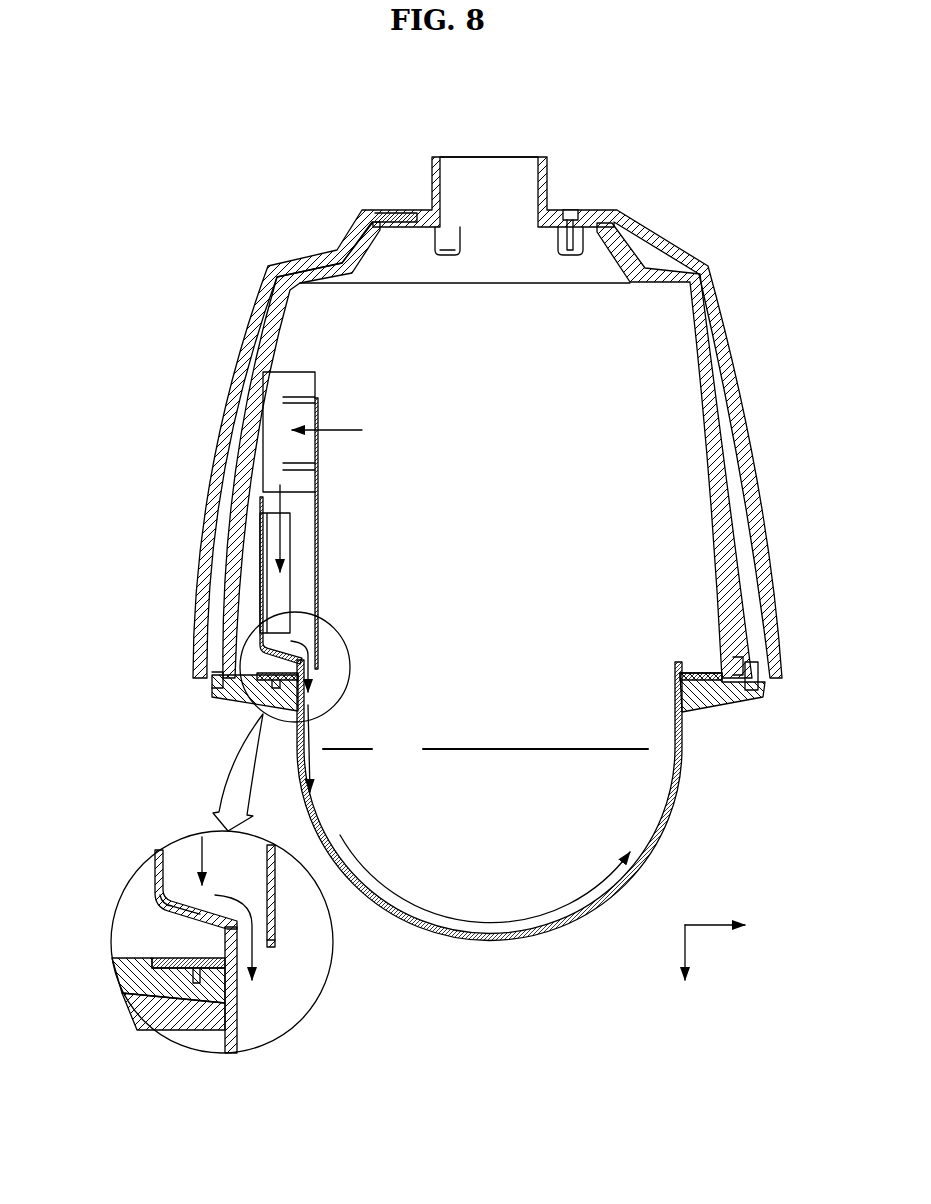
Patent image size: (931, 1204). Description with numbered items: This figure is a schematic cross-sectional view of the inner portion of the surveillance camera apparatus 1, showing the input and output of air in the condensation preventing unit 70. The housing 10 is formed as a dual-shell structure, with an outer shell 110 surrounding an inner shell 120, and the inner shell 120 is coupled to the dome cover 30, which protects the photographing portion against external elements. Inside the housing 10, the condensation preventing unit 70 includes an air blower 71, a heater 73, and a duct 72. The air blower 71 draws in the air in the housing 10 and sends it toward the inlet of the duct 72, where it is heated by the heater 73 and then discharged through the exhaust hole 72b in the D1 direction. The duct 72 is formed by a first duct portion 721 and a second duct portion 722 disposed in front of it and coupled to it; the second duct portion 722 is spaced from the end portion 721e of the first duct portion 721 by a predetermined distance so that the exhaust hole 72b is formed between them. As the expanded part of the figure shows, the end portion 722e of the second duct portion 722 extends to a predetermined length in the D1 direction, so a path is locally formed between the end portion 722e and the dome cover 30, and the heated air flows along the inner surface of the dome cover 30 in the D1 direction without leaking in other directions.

The surveillance camera apparatus 1 is at (702, 183).
The housing 10 is at (805, 323).
The outer shell 110 is at (725, 351).
The inner shell 120 is at (707, 397).
The dome cover 30 is at (676, 815).
The condensation preventing unit 70 is at (145, 428).
The air blower 71 is at (270, 437).
The duct 72 is at (254, 582).
The heater 73 is at (275, 533).
The first duct portion 721 is at (160, 877).
The end portion of the first duct portion 721e is at (165, 930).
The second duct portion 722 is at (278, 850).
The end portion of the second duct portion 722e is at (272, 950).
The exhaust hole 72b is at (258, 988).